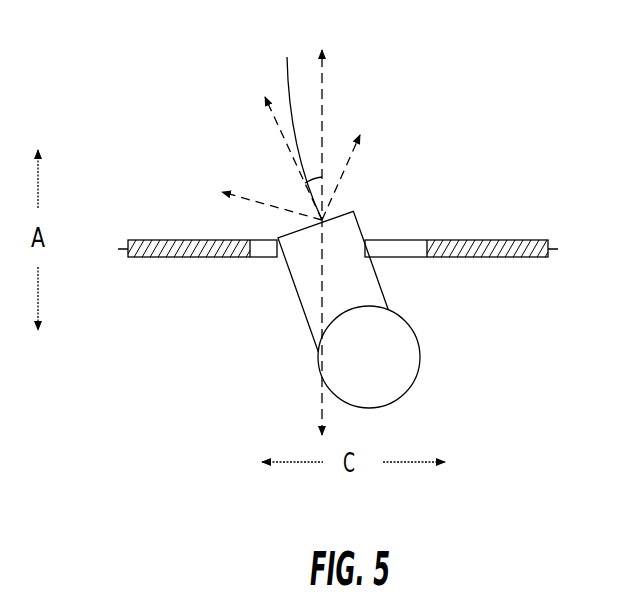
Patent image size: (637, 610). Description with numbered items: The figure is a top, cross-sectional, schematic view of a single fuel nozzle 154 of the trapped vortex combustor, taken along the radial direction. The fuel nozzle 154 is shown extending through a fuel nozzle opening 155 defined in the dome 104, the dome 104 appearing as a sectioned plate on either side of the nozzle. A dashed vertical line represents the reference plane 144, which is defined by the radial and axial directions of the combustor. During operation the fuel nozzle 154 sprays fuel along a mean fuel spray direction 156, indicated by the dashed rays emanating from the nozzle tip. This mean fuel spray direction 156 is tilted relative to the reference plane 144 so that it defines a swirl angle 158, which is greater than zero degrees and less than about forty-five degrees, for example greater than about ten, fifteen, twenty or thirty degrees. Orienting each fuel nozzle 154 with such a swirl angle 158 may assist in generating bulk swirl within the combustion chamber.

The dome 104 is at (483, 240).
The fuel nozzle opening 155 is at (383, 232).
The fuel nozzle 154 is at (388, 300).
The reference plane 144 is at (324, 98).
The mean fuel spray direction 156 is at (289, 150).
The swirl angle 158 is at (297, 123).